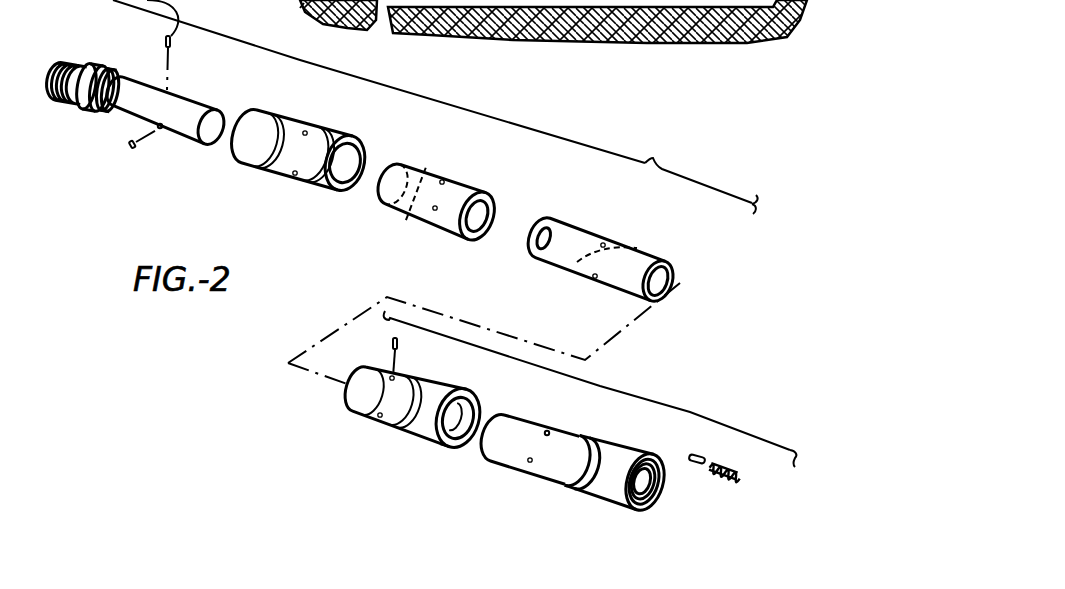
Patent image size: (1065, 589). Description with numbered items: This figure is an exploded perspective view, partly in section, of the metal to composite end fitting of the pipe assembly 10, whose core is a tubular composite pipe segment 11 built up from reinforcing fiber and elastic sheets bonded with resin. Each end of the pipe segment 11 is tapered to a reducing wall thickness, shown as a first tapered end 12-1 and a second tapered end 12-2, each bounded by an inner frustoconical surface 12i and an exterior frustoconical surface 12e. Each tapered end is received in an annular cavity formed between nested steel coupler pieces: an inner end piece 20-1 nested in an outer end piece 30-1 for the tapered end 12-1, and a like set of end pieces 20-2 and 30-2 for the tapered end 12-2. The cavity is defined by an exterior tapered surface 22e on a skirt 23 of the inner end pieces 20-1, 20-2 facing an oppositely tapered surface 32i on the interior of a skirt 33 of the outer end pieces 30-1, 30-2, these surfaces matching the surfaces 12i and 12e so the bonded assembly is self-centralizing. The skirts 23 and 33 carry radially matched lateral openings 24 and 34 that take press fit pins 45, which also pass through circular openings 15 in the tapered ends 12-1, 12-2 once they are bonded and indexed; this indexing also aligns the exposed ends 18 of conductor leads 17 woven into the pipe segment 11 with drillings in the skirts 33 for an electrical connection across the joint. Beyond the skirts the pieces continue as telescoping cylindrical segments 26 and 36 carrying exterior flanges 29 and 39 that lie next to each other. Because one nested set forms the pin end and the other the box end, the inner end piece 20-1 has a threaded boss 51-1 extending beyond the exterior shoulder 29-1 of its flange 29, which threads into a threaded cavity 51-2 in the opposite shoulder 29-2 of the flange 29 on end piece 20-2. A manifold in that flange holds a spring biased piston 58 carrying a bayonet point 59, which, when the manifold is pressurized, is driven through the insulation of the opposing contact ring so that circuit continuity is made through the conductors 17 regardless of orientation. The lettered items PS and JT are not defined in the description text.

The pipe assembly 10 is at (653, 158).
The tubular composite pipe segment 11 is at (484, 200).
The first tapered end 12-1 is at (443, 222).
The second tapered end 12-2 is at (627, 294).
The exterior frustoconical surface 12e is at (420, 170).
The inner frustoconical surface 12i is at (676, 270).
The circular openings 15 is at (444, 184).
The conductor leads 17 is at (402, 219).
The exposed ends of conductor leads 18 is at (378, 158).
The inner end piece 20-1 is at (118, 68).
The inner end piece 20-2 is at (613, 504).
The exterior tapered surface 22e is at (170, 92).
The skirt 23 is at (202, 140).
The lateral openings 24 is at (563, 435).
The telescoping cylindrical segment 26 is at (604, 446).
The exterior flange 29 is at (78, 112).
The exterior shoulder 29-1 is at (86, 60).
The exterior shoulder 29-2 is at (650, 507).
The outer end piece 30-1 is at (240, 173).
The outer end piece 30-2 is at (369, 424).
The interior tapered surface 32i is at (347, 188).
The skirt 33 is at (312, 128).
The lateral openings 34 is at (306, 135).
The telescoping cylindrical segment 36 is at (466, 444).
The exterior flange 39 is at (450, 387).
The pins 45 is at (133, 148).
The threaded boss 51-1 is at (60, 104).
The threaded cavity 51-2 is at (662, 480).
The spring biased piston 58 is at (698, 456).
The bayonet point 59 is at (712, 462).
The pipe section PS is at (300, 8).
The joint JT is at (447, 0).